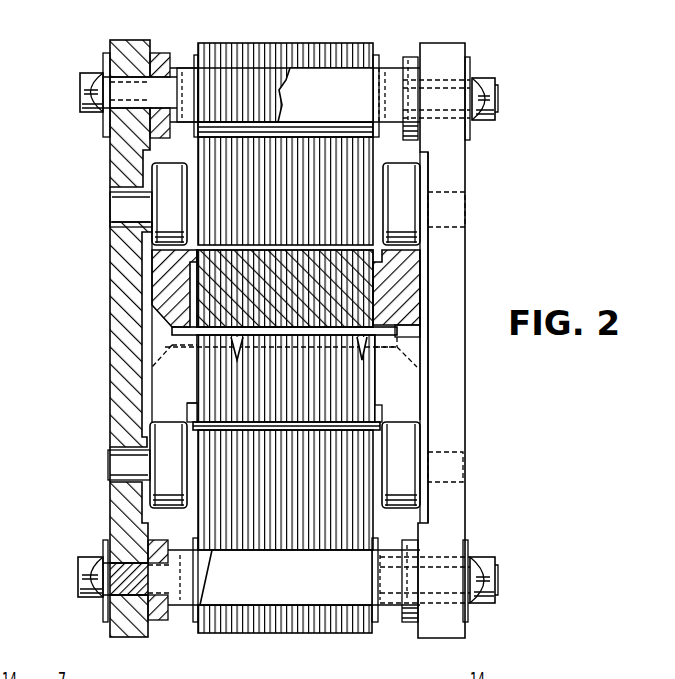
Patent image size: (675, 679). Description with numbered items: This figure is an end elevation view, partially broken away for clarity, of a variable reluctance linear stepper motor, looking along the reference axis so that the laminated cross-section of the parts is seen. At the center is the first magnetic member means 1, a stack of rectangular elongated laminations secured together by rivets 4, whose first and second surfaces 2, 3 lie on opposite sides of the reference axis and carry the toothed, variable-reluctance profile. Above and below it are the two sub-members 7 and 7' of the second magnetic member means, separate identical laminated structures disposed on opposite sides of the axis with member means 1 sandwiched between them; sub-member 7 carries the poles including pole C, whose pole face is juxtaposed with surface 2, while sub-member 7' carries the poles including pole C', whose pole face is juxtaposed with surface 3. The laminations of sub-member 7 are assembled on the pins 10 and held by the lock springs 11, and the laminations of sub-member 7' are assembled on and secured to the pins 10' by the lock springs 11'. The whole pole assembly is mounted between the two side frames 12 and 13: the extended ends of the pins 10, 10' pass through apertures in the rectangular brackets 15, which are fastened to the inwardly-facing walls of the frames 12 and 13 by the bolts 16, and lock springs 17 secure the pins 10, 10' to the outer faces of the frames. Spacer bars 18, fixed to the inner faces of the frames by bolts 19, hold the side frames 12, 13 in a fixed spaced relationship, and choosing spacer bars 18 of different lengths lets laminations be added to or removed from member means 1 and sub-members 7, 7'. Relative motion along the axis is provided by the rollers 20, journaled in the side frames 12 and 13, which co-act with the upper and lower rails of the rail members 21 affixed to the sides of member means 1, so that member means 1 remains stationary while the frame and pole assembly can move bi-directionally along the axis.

The first magnetic member means 1 is at (337, 382).
The first surface 2 is at (250, 250).
The second surface 3 is at (222, 422).
The rivets 4 is at (413, 320).
The sub-member 7 is at (285, 67).
The sub-member 7' is at (285, 605).
The pins 10 is at (516, 87).
The pins 10' is at (520, 576).
The lock springs 11 is at (261, 75).
The lock springs 11' is at (261, 580).
The side frame 12 is at (118, 46).
The side frame 13 is at (437, 47).
The rectangular brackets 15 is at (162, 60).
The bolts 16 is at (92, 95).
The lock springs 17 is at (100, 78).
The spacer bars 18 is at (337, 107).
The bolts 19 is at (475, 80).
The rollers 20 is at (178, 201).
The rail plates or members 21 is at (162, 293).
The electromagnetic pole C is at (297, 183).
The electromagnetic pole C' is at (297, 490).